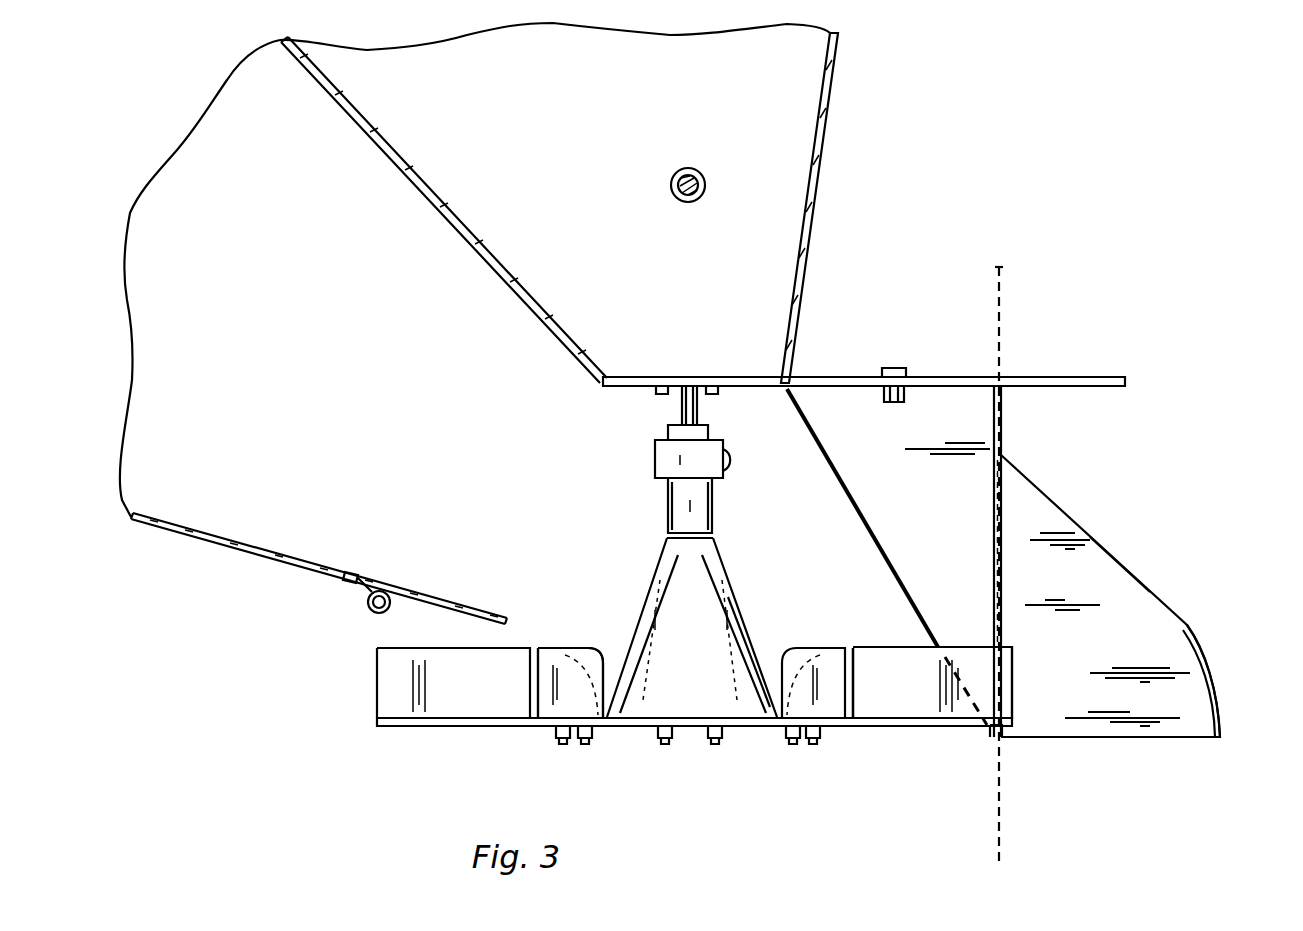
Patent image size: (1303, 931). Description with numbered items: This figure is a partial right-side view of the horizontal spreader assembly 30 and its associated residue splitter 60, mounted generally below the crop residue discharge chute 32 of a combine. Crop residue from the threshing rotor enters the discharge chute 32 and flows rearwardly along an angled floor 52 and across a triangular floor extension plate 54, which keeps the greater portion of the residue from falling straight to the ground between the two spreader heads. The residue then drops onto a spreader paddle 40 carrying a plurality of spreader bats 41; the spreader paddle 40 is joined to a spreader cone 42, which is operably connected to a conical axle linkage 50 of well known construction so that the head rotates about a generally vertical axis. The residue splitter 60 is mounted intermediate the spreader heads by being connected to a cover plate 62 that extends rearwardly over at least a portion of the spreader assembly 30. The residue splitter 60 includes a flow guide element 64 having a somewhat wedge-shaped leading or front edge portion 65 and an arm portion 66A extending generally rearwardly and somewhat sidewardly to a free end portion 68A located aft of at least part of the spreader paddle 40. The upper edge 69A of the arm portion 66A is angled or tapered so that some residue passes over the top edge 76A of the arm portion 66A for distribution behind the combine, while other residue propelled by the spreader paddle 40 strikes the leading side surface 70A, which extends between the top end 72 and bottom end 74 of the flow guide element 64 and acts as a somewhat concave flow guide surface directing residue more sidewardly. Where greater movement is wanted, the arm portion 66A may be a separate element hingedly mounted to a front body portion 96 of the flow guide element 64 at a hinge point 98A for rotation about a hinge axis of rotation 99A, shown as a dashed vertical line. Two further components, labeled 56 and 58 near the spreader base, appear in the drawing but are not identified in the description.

The horizontal spreader assembly 30 is at (840, 563).
The crop residue discharge chute 32 is at (250, 474).
The spreader paddle 40 is at (469, 717).
The spreader bats 41 is at (497, 680).
The spreader cone 42 is at (741, 604).
The conical axle linkage 50 is at (663, 504).
The angled floor 52 is at (220, 548).
The triangular floor extension plate 54 is at (418, 592).
The strut 56 is at (745, 705).
The clamp divider 58 is at (883, 714).
The residue splitter 60 is at (1204, 622).
The cover plate 62 is at (825, 377).
The flow guide element 64 is at (1002, 405).
The leading edge portion 65 is at (858, 432).
The arm portion 66A is at (1135, 608).
The free end portion 68A is at (1222, 683).
The upper edge 69A is at (1125, 562).
The leading side surface 70A is at (1081, 697).
The top end 72 is at (972, 377).
The bottom end 74 is at (1155, 738).
The top edge 76A is at (1085, 532).
The front body portion 96 is at (918, 415).
The hinge point 98A is at (1002, 452).
The hinge axis of rotation 99A is at (996, 270).